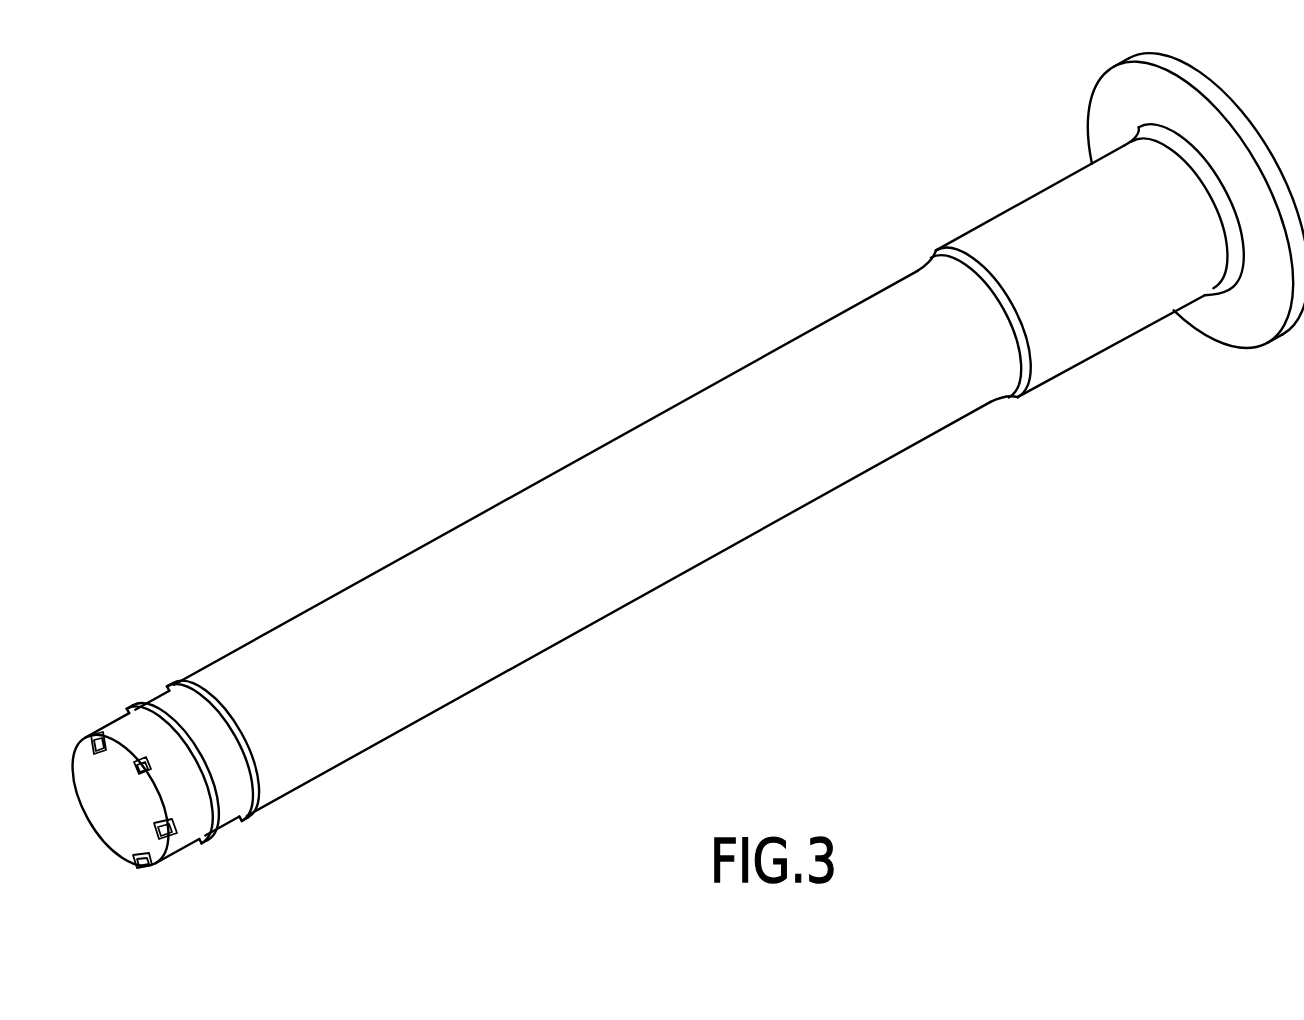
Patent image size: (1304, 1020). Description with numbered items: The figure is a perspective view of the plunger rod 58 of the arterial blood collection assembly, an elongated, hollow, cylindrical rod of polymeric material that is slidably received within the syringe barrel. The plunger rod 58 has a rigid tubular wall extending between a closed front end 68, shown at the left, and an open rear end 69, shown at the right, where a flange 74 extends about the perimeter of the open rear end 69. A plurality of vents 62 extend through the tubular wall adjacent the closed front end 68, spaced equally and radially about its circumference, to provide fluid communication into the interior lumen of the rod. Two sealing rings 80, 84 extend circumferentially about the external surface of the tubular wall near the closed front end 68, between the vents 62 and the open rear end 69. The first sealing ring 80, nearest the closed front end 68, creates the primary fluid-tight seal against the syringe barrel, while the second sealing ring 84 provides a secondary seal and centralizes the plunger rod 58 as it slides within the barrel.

The plunger rod 58 is at (520, 416).
The vents 62 is at (145, 868).
The closed front end 68 is at (90, 831).
The open rear end 69 is at (1058, 70).
The flange 74 is at (1127, 93).
The first sealing ring 80 is at (127, 707).
The second sealing ring 84 is at (173, 687).